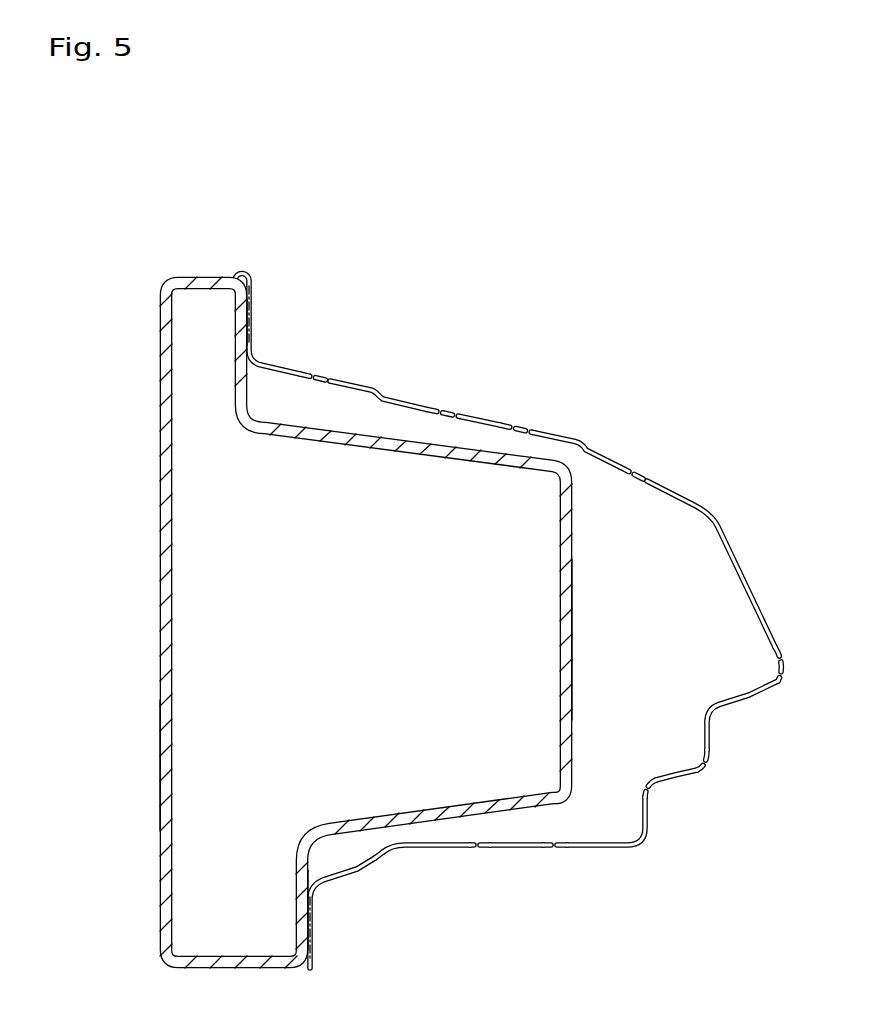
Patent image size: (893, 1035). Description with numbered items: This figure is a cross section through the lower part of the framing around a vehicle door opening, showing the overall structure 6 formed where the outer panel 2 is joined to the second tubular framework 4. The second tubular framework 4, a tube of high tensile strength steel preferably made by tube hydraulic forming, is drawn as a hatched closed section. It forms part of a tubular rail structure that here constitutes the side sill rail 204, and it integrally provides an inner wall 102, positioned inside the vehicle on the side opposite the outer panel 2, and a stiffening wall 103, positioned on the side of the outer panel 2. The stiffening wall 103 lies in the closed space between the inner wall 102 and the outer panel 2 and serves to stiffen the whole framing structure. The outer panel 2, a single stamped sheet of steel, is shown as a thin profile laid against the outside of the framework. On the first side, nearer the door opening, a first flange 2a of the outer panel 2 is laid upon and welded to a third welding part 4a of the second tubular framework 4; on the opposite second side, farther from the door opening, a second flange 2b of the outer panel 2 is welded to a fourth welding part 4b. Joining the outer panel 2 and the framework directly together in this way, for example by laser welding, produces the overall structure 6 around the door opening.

The outer panel 2 is at (737, 540).
The first flange 2a is at (251, 297).
The second flange 2b is at (312, 928).
The second tubular framework 4 is at (150, 660).
The third welding part 4a is at (251, 333).
The fourth welding part 4b is at (312, 906).
The overall structure 6 is at (492, 302).
The inner wall 102 is at (158, 765).
The stiffening wall 103 is at (572, 642).
The side sill rail 204 is at (628, 425).